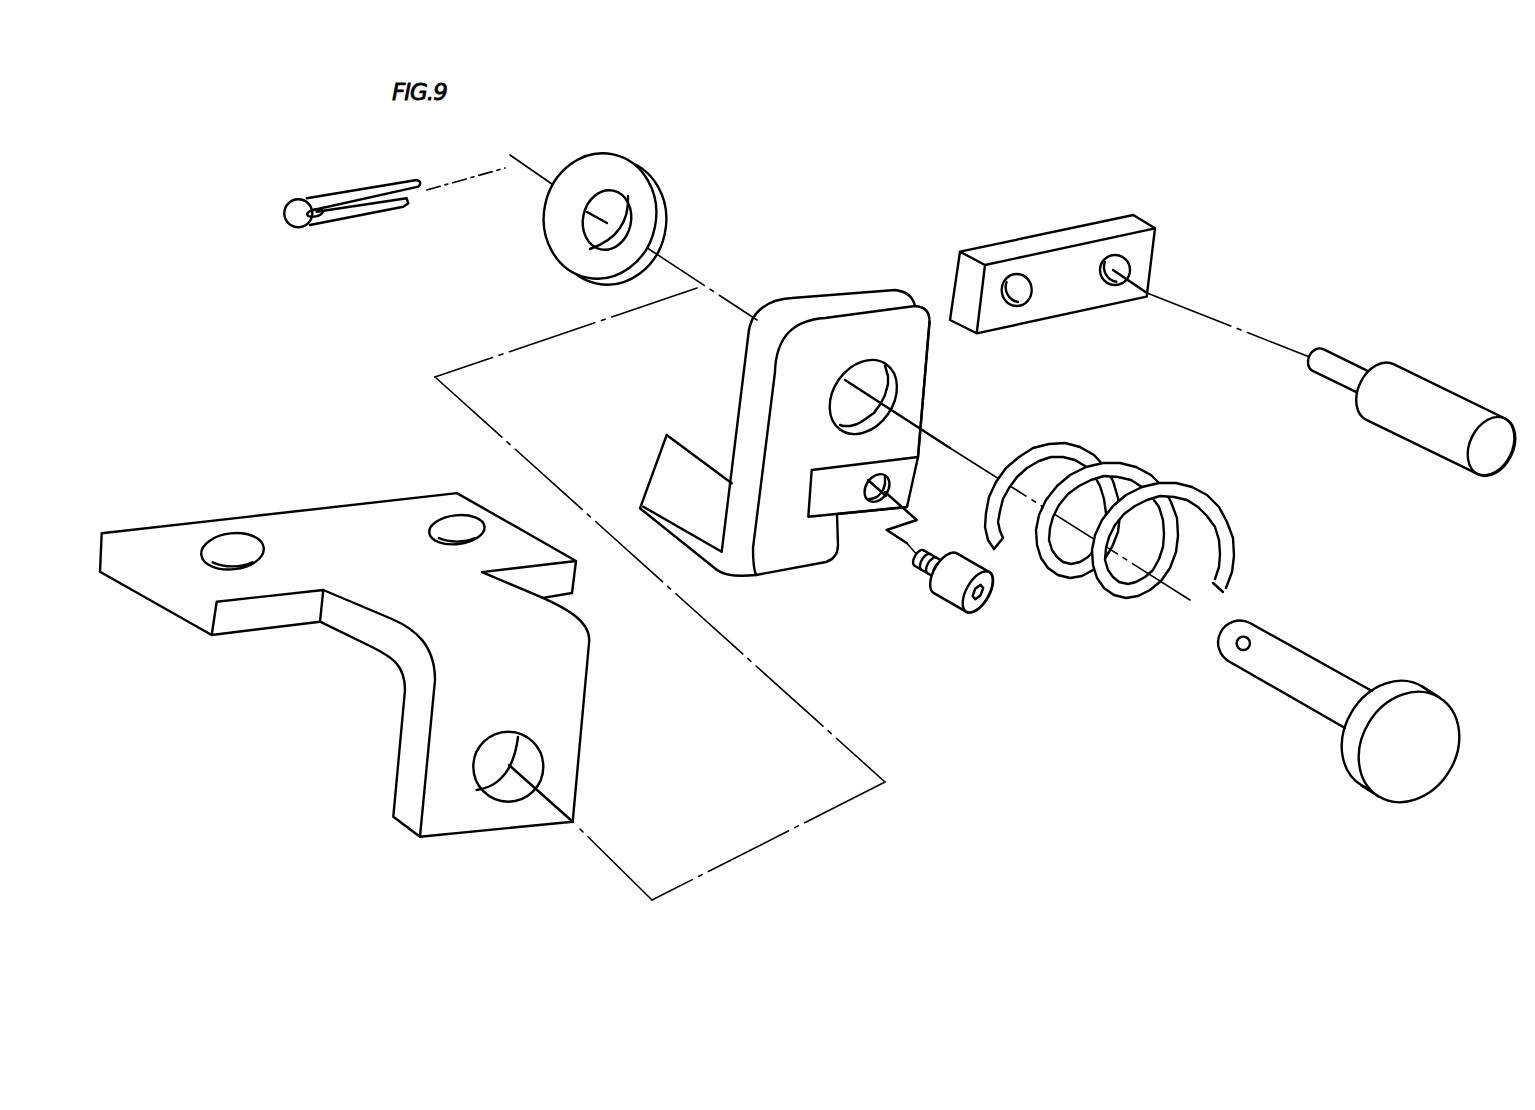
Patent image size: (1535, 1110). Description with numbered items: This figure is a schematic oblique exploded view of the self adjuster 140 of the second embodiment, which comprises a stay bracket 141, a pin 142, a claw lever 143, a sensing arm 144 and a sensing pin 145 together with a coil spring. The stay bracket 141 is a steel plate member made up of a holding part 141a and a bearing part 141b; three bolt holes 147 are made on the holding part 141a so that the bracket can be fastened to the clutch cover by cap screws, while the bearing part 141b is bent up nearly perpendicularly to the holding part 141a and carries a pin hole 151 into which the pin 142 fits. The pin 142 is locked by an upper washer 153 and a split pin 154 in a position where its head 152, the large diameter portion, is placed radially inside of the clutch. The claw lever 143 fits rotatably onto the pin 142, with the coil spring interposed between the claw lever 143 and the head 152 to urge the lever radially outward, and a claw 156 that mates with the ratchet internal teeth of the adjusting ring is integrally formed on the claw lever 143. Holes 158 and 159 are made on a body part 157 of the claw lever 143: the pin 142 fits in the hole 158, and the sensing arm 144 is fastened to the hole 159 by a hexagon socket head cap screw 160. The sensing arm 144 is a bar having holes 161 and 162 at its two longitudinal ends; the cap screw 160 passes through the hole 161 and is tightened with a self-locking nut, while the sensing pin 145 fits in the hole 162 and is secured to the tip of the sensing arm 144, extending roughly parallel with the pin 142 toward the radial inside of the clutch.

The self adjuster 140 is at (876, 511).
The stay bracket 141 is at (396, 640).
The holding part 141a is at (338, 539).
The bearing part 141b is at (478, 713).
The bolt holes 147 is at (231, 551).
The pin hole 151 is at (532, 765).
The claw lever 143 is at (783, 406).
The claw 156 is at (672, 452).
The body part 157 is at (913, 397).
The hole 158 is at (865, 370).
The hole 159 is at (890, 487).
The hexagon socket head cap screw 160 is at (950, 606).
The sensing arm 144 is at (1119, 248).
The hole 161 is at (1024, 277).
The hole 162 is at (1118, 263).
The sensing pin 145 is at (1392, 420).
The pin 142 is at (1348, 717).
The head 152 is at (1352, 757).
The upper washer 153 is at (557, 237).
The split pin 154 is at (303, 228).